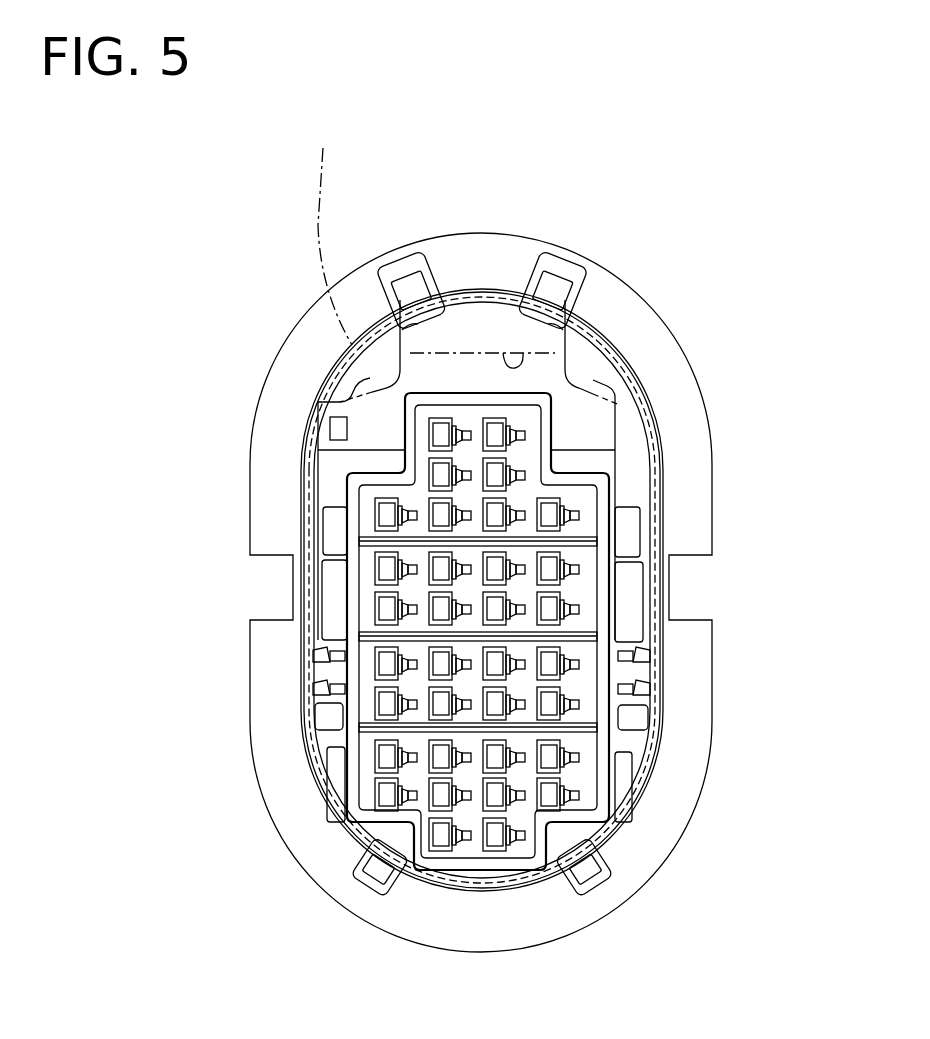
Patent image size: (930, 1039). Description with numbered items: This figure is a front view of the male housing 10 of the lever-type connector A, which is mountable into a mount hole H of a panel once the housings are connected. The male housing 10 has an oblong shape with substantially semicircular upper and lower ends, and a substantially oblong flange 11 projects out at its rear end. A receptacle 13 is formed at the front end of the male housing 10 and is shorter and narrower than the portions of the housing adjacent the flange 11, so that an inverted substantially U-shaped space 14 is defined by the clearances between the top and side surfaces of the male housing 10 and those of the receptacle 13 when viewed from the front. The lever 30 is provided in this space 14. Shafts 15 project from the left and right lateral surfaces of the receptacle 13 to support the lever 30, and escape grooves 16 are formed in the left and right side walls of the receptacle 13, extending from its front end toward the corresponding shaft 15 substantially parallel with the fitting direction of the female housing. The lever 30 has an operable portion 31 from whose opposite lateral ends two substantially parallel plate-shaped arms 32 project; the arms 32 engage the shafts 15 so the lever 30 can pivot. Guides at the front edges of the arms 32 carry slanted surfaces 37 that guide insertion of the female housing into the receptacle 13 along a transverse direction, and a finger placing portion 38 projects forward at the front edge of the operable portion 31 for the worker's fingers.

The lever-type connector A is at (713, 212).
The mount hole H is at (333, 233).
The male housing 10 is at (635, 420).
The flange 11 is at (665, 345).
The receptacle 13 is at (588, 474).
The inverted U-shaped space 14 is at (592, 365).
The shafts 15 is at (313, 692).
The escape grooves 16 is at (360, 657).
The lever 30 is at (508, 267).
The operable portion 31 is at (465, 307).
The arms 32 is at (320, 717).
The slanted surface 37 is at (323, 490).
The finger placing portion 38 is at (533, 352).